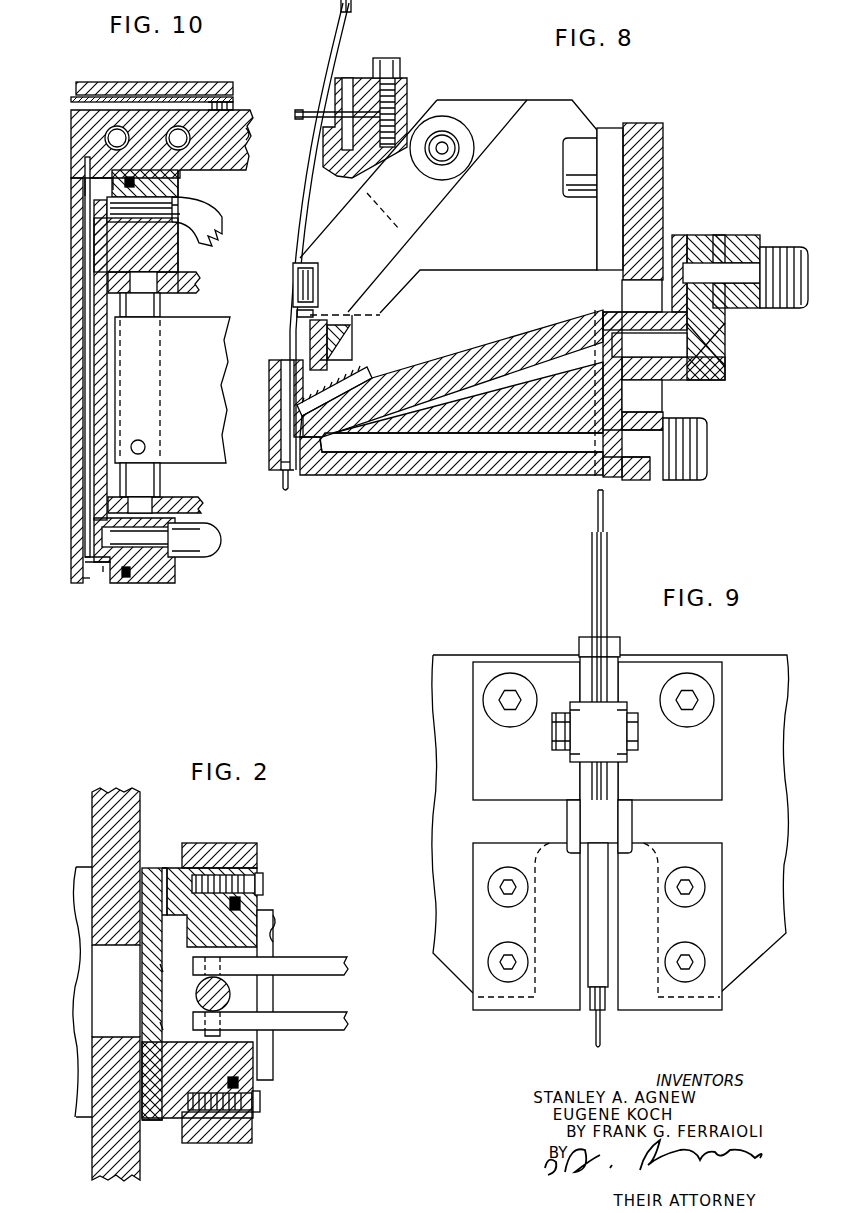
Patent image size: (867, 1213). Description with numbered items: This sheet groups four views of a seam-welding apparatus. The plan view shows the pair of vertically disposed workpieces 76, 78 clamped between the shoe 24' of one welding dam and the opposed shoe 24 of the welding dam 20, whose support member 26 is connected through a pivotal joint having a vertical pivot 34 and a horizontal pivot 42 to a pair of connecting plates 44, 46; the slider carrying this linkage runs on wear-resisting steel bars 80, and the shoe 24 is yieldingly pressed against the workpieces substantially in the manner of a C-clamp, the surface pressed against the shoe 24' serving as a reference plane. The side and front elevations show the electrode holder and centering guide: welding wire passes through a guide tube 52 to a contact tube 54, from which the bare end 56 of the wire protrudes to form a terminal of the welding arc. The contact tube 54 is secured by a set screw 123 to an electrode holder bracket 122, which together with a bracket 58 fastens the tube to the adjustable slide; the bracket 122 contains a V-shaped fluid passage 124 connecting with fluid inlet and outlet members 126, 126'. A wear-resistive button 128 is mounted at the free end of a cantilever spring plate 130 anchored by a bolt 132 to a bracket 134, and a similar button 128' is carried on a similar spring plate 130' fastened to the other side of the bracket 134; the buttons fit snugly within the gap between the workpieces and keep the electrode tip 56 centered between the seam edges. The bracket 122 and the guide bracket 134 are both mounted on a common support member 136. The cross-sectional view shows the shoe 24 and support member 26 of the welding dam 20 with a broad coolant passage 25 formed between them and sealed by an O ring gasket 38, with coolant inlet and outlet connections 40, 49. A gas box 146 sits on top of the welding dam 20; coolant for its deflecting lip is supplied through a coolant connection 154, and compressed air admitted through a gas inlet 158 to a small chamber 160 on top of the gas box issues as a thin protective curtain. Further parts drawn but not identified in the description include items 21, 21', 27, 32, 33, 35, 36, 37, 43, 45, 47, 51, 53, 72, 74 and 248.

In FIG. 10, the welding dam 20 is at (68, 306).
In FIG. 10, the wall plate 21 is at (58, 380).
In FIG. 2, the wall plate 21 is at (133, 994).
In FIG. 2, the wall plate 21' is at (61, 991).
In FIG. 10, the shoe 24 is at (73, 355).
In FIG. 2, the shoe 24 is at (154, 1126).
In FIG. 2, the shoe 24' is at (61, 992).
In FIG. 10, the broad passage 25 is at (88, 426).
In FIG. 2, the broad passage 25 is at (163, 932).
In FIG. 10, the support member 26 is at (172, 256).
In FIG. 2, the support member 26 is at (252, 1138).
In FIG. 10, the shaft 27 is at (173, 307).
In FIG. 2, the shaft 27 is at (245, 955).
In FIG. 2, the gap 32 is at (160, 968).
In FIG. 2, the screw 33 is at (264, 882).
In FIG. 10, the vertical pivot 34 is at (152, 484).
In FIG. 2, the vertical pivot 34 is at (232, 991).
In FIG. 10, the bearing plate 35 is at (196, 279).
In FIG. 2, the clamp block 36 is at (220, 850).
In FIG. 10, the bearing plate 37 is at (193, 504).
In FIG. 2, the bearing plate 37 is at (262, 1066).
In FIG. 10, the O ring gasket 38 is at (126, 580).
In FIG. 2, the O ring gasket 38 is at (243, 903).
In FIG. 10, the coolant inlet connection 40 is at (208, 218).
In FIG. 10, the horizontal pivot 42 is at (146, 448).
In FIG. 2, the horizontal pivot 42 is at (222, 1036).
In FIG. 10, the block 43 is at (179, 187).
In FIG. 10, the connecting plate 44 is at (212, 460).
In FIG. 2, the connecting plate 44 is at (325, 1032).
In FIG. 10, the mounting block 45 is at (107, 237).
In FIG. 2, the mounting block 45 is at (240, 930).
In FIG. 2, the connecting plate 46 is at (322, 965).
In FIG. 10, the bushing 47 is at (107, 206).
In FIG. 10, the coolant outlet connection 49 is at (217, 552).
In FIG. 10, the bore 51 is at (145, 548).
In FIG. 8, the guide tube 52 is at (332, 50).
In FIG. 9, the guide tube 52 is at (607, 576).
In FIG. 10, the gap 53 is at (100, 576).
In FIG. 8, the contact tube 54 is at (278, 467).
In FIG. 9, the contact tube 54 is at (608, 1012).
In FIG. 8, the bare end of the wire 56 is at (288, 482).
In FIG. 8, the bracket 58 is at (662, 215).
In FIG. 10, the bracket 72 is at (97, 183).
In FIG. 10, the corner 74 is at (88, 576).
In FIG. 2, the workpiece 76 is at (100, 818).
In FIG. 2, the workpiece 78 is at (100, 1142).
In FIG. 2, the wear-resisting steel bars 80 is at (97, 990).
In FIG. 8, the electrode holder bracket 122 is at (390, 474).
In FIG. 9, the electrode holder bracket 122 is at (602, 939).
In FIG. 8, the set screw 123 is at (378, 362).
In FIG. 8, the V-shaped fluid passage 124 is at (470, 457).
In FIG. 8, the fluid inlet member 126 is at (657, 408).
In FIG. 8, the fluid outlet member 126' is at (705, 307).
In FIG. 8, the wear-resistive button 128 is at (326, 264).
In FIG. 9, the wear-resistive button 128 is at (655, 826).
In FIG. 9, the wear-resistive button 128' is at (532, 826).
In FIG. 8, the cantilever spring plate 130 is at (448, 207).
In FIG. 9, the cantilever spring plate 130 is at (670, 836).
In FIG. 9, the spring plate 130' is at (526, 836).
In FIG. 8, the bolt 132 is at (455, 160).
In FIG. 9, the bolt 132 is at (638, 732).
In FIG. 8, the bracket 134 is at (553, 116).
In FIG. 9, the bracket 134 is at (608, 679).
In FIG. 9, the common support member 136 is at (760, 680).
In FIG. 10, the gas box 146 is at (248, 108).
In FIG. 10, the coolant inlet connection 154 is at (83, 121).
In FIG. 10, the gas inlet 158 is at (249, 133).
In FIG. 10, the small chamber 160 is at (167, 80).
In FIG. 8, the blade tip 248 is at (350, 10).
In FIG. 9, the blade tip 248 is at (596, 514).